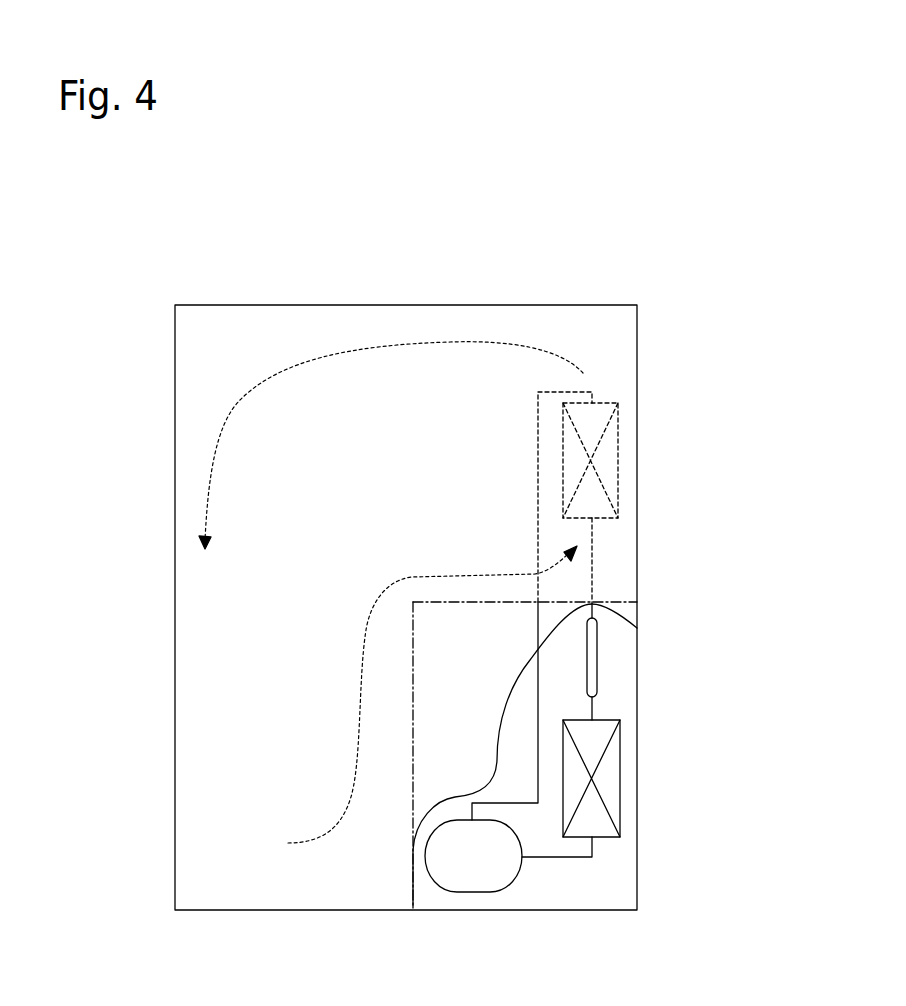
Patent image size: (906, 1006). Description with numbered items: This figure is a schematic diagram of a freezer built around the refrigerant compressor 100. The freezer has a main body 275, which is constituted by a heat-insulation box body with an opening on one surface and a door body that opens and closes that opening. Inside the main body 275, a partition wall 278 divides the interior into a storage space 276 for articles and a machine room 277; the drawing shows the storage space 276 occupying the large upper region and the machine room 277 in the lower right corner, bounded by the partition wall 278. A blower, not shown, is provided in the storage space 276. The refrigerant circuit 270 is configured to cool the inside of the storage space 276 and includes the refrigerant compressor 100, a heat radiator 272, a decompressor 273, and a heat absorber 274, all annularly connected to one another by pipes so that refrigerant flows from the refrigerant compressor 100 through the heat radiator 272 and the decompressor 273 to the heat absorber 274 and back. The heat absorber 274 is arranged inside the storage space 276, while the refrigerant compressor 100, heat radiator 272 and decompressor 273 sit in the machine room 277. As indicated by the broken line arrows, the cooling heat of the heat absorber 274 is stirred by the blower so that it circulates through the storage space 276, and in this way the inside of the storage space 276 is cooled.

The main body 275 is at (220, 305).
The storage space 276 is at (258, 628).
The heat absorber 274 is at (618, 433).
The decompressor 273 is at (597, 663).
The refrigerant circuit 270 is at (623, 692).
The heat radiator 272 is at (618, 808).
The machine room 277 is at (575, 887).
The partition wall 278 is at (412, 778).
The refrigerant compressor 100 is at (455, 890).